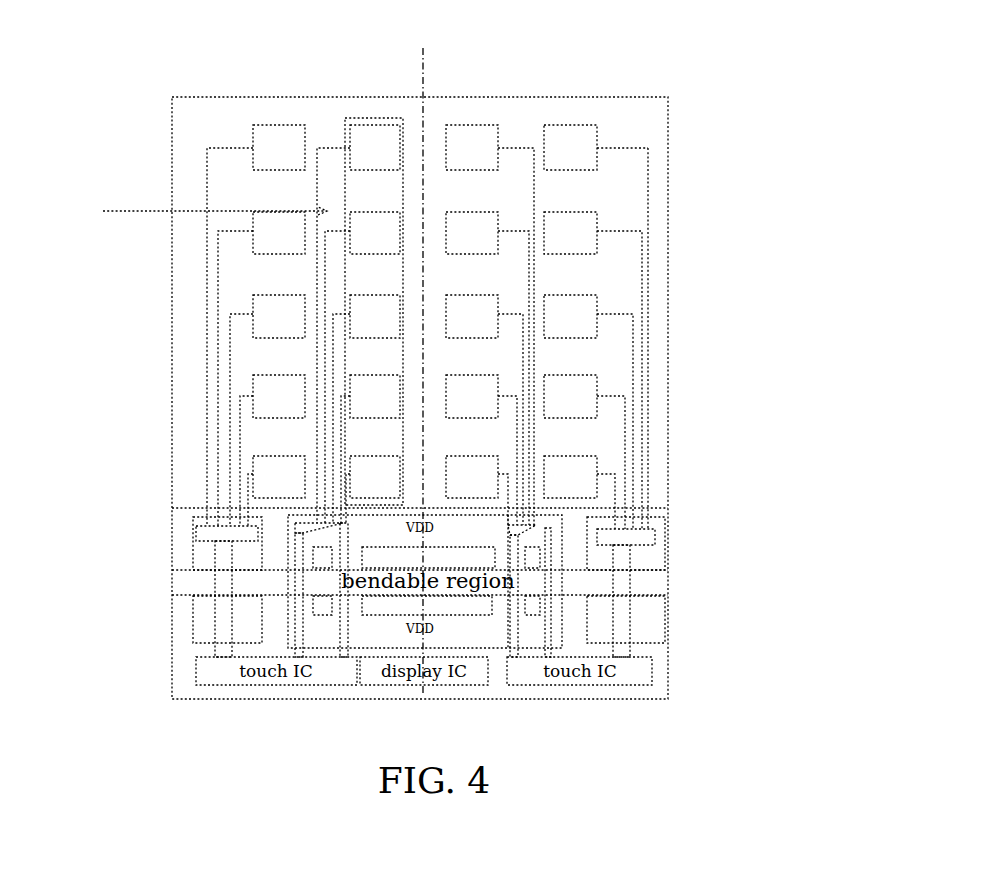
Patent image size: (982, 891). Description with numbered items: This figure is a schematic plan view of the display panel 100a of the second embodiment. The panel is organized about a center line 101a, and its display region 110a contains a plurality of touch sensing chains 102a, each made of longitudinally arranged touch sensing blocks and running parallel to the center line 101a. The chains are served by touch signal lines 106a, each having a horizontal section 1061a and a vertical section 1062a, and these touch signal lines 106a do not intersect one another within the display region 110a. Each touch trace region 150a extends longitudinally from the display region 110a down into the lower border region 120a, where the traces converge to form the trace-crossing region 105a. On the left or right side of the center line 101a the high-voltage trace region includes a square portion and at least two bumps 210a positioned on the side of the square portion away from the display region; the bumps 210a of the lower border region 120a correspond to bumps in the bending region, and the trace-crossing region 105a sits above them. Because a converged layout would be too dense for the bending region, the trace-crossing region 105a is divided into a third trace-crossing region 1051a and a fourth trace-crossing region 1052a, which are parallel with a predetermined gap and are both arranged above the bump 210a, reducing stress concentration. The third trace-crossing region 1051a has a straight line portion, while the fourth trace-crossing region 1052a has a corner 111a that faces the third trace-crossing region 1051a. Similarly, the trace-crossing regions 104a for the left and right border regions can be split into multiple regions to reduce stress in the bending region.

The display panel 100a is at (503, 54).
The center line 101a is at (415, 76).
The touch sensing chain 102a is at (365, 111).
The display region 110a is at (536, 119).
The touch signal line 106a is at (532, 303).
The horizontal section 1061a is at (638, 139).
The vertical section 1062a is at (652, 185).
The touch trace region 150a is at (188, 212).
The lower border region 120a is at (669, 499).
The trace-crossing region 104a is at (205, 542).
The bump 210a is at (562, 561).
The trace-crossing region 105a is at (180, 550).
The third trace-crossing region 1051a is at (336, 561).
The fourth trace-crossing region 1052a is at (295, 525).
The corner 111a is at (531, 544).